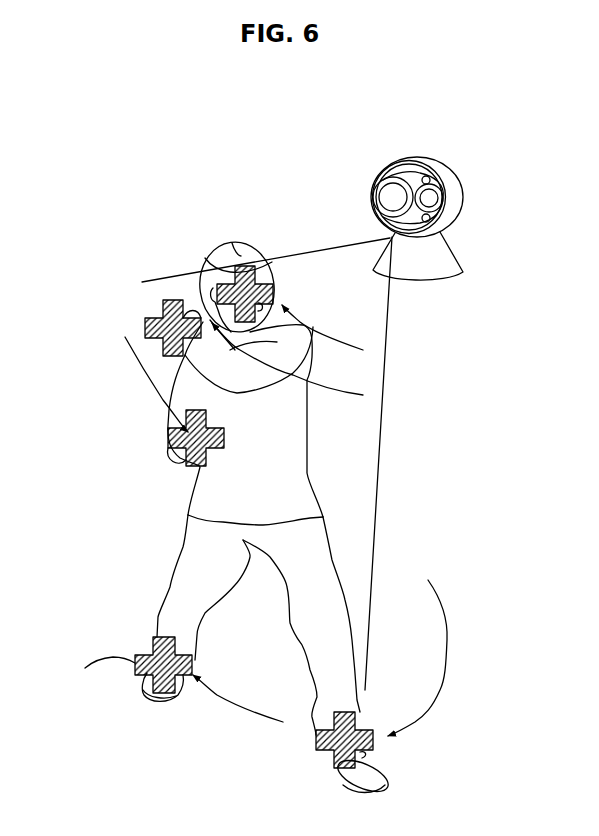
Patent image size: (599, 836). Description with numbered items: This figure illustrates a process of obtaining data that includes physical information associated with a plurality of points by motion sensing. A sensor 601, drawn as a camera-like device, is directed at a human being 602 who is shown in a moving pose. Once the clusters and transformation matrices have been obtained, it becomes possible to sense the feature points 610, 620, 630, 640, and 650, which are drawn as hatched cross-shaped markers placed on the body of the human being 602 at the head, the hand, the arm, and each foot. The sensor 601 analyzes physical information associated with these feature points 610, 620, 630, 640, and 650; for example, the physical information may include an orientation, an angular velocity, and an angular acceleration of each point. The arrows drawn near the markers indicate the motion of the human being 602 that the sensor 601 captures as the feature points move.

The sensor 601 is at (422, 157).
The human being 602 is at (312, 473).
The feature point 610 is at (205, 272).
The feature point 620 is at (145, 323).
The feature point 630 is at (168, 418).
The feature point 640 is at (135, 664).
The feature point 650 is at (316, 747).